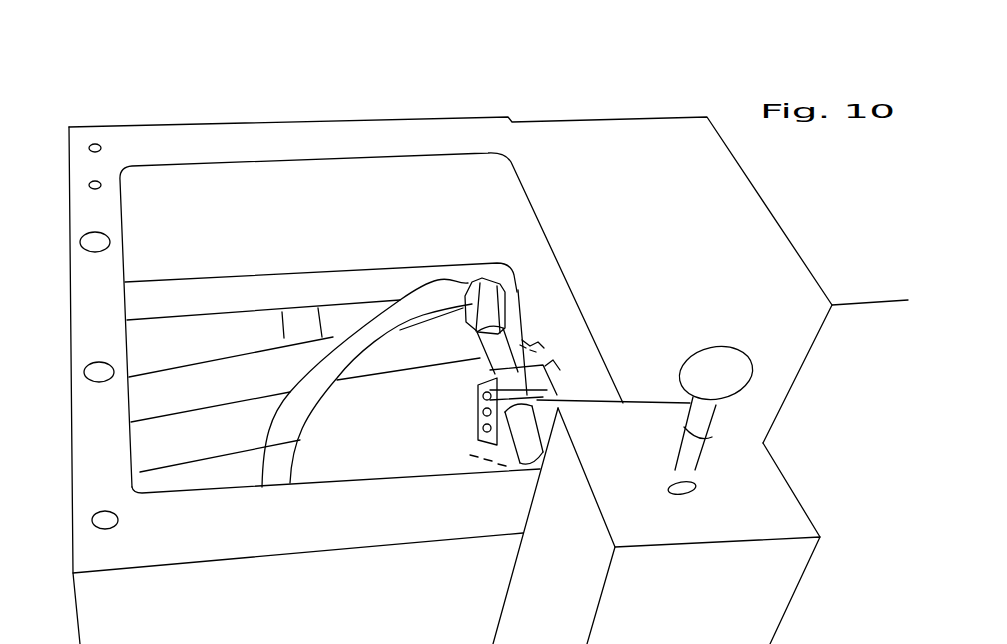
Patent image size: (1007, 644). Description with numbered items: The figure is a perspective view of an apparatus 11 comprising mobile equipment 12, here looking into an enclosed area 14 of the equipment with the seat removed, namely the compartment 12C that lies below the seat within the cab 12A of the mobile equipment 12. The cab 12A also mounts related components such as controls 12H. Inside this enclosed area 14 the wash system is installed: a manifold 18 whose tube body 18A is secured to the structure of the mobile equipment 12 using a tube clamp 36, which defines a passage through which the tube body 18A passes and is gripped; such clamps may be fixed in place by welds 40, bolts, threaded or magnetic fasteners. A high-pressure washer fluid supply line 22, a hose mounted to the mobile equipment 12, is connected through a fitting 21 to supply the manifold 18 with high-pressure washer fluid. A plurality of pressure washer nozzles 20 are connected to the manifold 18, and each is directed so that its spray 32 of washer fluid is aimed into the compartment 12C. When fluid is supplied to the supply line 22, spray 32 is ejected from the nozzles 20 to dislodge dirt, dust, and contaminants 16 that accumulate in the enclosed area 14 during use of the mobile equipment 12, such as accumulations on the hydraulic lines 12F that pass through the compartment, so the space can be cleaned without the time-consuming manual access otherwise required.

The apparatus 11 is at (110, 97).
The mobile equipment 12 is at (598, 175).
The cab 12A is at (685, 185).
The compartment 12C is at (375, 438).
The hydraulic lines 12F is at (292, 331).
The controls 12H is at (715, 390).
The enclosed area 14 is at (200, 253).
The dirt, dust, and contaminants 16 is at (423, 452).
The manifold 18 is at (522, 325).
The tube body 18A is at (538, 462).
The pressure washer nozzles 20 is at (533, 333).
The coupling fitting 21 is at (500, 285).
The high-pressure washer fluid supply line 22 is at (470, 280).
The spray 32 is at (543, 340).
The tube clamp 36 is at (557, 403).
The welds 40 is at (528, 352).